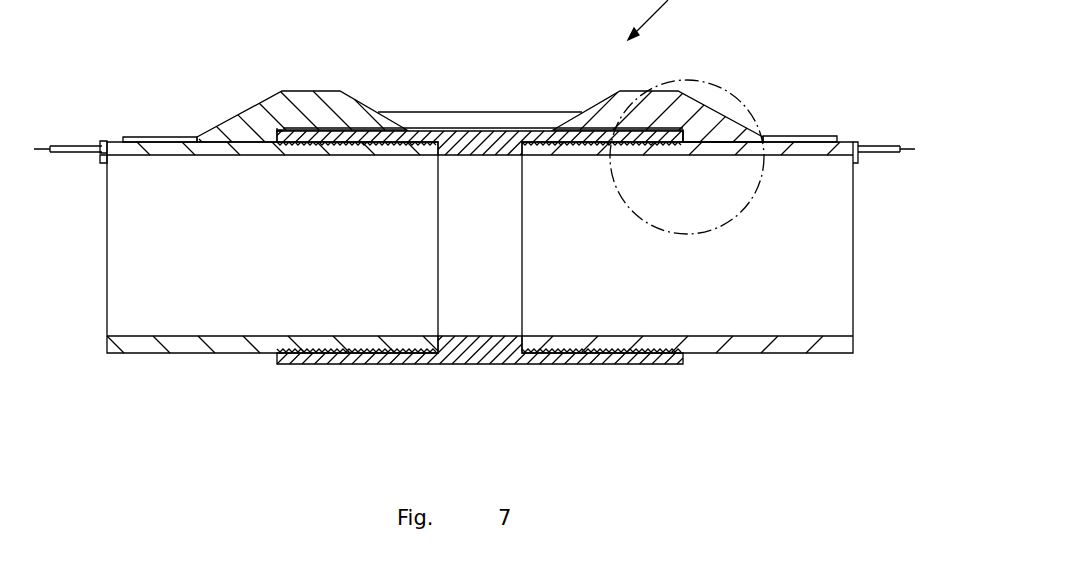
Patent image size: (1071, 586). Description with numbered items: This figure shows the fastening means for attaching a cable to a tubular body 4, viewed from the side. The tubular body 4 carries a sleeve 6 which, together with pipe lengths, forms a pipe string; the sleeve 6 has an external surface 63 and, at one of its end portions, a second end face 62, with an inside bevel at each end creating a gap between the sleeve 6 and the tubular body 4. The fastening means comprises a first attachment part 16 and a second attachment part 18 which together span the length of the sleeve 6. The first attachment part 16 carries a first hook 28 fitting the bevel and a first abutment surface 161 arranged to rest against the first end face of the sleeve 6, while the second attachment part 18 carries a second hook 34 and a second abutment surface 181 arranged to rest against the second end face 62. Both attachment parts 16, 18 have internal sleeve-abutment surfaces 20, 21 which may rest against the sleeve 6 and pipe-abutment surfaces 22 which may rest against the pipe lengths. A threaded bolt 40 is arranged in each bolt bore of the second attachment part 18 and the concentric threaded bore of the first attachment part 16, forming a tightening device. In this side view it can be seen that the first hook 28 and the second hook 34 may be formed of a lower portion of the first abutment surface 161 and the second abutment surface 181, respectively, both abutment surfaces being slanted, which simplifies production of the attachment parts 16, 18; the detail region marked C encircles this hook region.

The tubular body 4 is at (733, 345).
The sleeve 6 is at (533, 357).
The first attachment part 16 is at (691, 122).
The first abutment surface 161 is at (687, 133).
The second attachment part 18 is at (275, 107).
The second abutment surface 181 is at (277, 130).
The internal sleeve-abutment surface 20 is at (603, 128).
The internal sleeve-abutment surface 21 is at (352, 131).
The pipe-abutment surface 22 is at (763, 137).
The first hook 28 is at (720, 135).
The second hook 34 is at (269, 146).
The threaded bolt 40 is at (490, 122).
The second end face 62 is at (268, 142).
The external surface 63 is at (433, 129).
The detail circle C is at (687, 178).